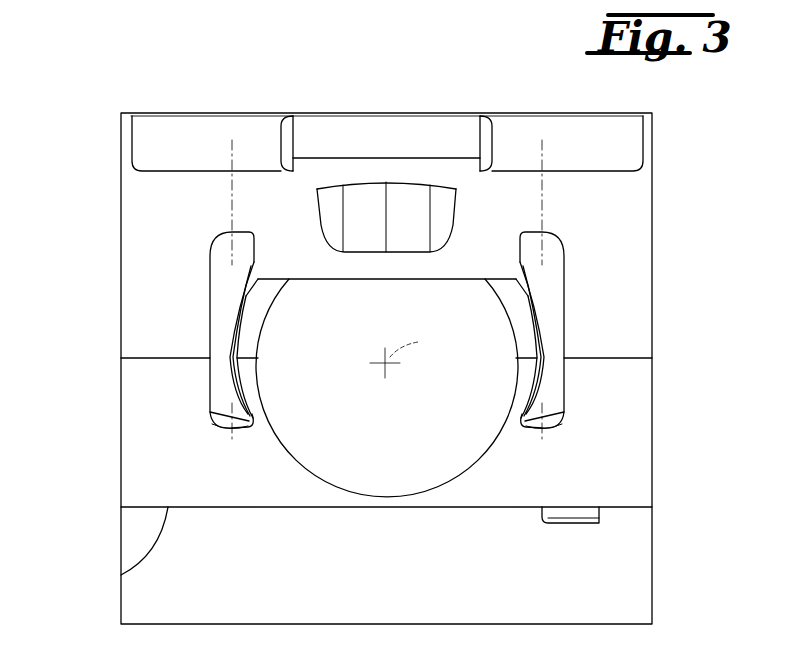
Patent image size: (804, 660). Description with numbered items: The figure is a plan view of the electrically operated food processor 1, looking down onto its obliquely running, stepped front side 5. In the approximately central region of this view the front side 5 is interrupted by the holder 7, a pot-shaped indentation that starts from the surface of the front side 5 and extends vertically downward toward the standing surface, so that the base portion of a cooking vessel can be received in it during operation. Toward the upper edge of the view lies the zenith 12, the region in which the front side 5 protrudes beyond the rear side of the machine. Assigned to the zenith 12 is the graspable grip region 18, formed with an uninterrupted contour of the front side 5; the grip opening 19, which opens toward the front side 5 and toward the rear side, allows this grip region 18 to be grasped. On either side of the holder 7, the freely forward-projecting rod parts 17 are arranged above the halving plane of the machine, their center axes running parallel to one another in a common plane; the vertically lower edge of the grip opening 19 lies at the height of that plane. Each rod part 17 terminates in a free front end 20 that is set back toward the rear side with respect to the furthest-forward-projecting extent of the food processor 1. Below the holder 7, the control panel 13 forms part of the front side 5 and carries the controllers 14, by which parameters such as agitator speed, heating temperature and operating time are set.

The food processor 1 is at (90, 157).
The front side 5 is at (598, 477).
The holder 7 is at (467, 360).
The zenith 12 is at (383, 150).
The control panel 13 is at (121, 575).
The controllers 14 is at (587, 518).
The rod parts 17 is at (195, 340).
The grip region 18 is at (338, 146).
The grip opening 19 is at (407, 206).
The free front end 20 is at (228, 418).